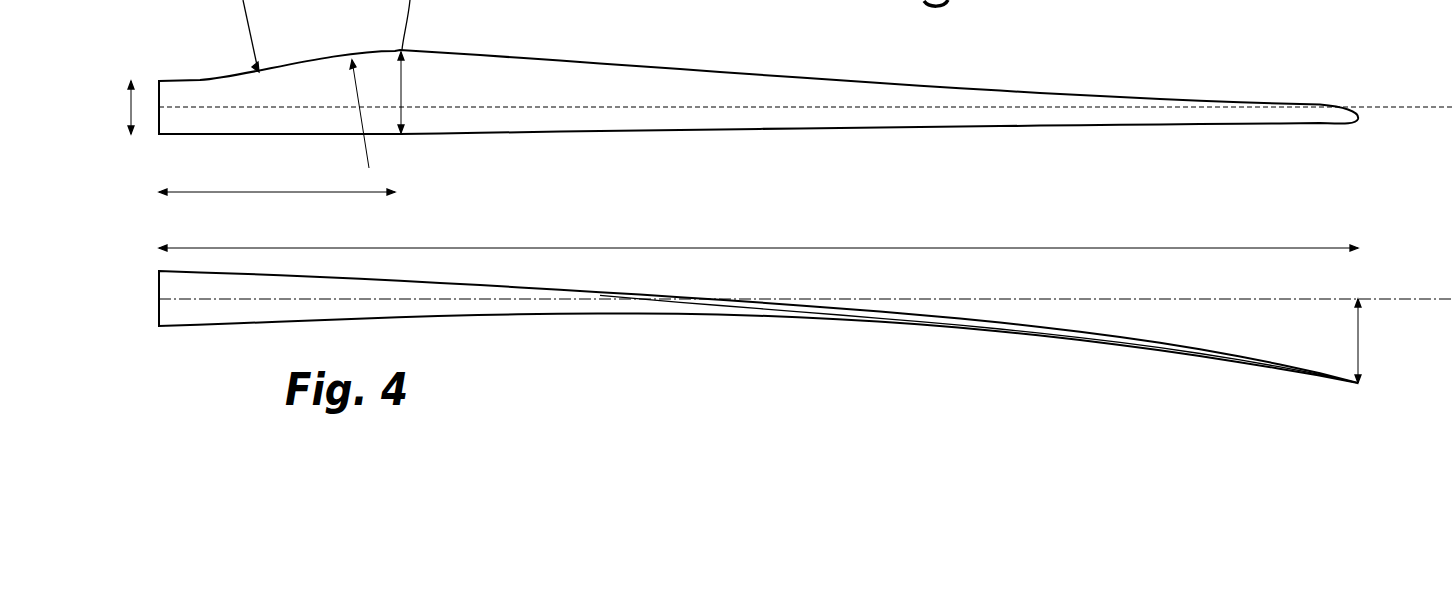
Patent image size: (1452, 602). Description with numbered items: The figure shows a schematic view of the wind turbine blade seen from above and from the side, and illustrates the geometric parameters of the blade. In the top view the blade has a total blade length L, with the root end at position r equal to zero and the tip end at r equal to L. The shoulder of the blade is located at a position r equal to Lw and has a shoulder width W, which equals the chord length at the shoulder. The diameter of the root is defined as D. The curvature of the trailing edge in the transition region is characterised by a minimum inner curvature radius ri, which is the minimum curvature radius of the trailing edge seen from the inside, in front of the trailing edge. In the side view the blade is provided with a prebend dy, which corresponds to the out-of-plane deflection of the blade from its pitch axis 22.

The pitch axis 22 is at (635, 107).
The root diameter D is at (120, 107).
The shoulder width W is at (417, 92).
The minimum inner curvature radius ri is at (369, 168).
The shoulder position Lw is at (277, 180).
The total blade length L is at (758, 234).
The prebend dy is at (1376, 341).